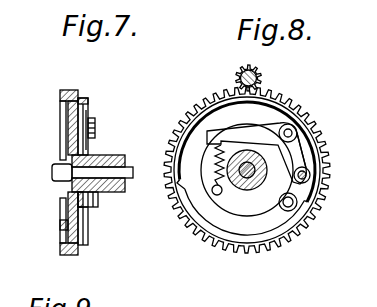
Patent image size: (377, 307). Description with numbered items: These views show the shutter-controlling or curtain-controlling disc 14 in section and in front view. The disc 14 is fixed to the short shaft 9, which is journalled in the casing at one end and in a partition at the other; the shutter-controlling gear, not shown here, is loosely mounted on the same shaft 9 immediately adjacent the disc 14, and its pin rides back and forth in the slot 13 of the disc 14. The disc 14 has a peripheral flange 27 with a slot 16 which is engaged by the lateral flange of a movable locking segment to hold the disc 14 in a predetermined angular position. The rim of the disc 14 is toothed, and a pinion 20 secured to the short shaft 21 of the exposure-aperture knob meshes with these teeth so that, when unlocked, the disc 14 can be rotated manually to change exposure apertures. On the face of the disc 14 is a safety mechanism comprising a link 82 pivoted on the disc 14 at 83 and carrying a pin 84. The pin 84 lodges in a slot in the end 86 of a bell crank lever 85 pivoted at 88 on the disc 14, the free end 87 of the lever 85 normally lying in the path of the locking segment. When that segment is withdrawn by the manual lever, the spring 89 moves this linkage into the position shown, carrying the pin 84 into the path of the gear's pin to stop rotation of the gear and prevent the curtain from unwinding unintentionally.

In FIG. 7, the short shaft 9 is at (125, 173).
In FIG. 8, the short shaft 9 is at (238, 190).
In FIG. 7, the slot 13 is at (63, 114).
In FIG. 7, the curtain-controlling disc 14 is at (79, 97).
In FIG. 8, the curtain-controlling disc 14 is at (282, 100).
In FIG. 8, the slot 16 is at (177, 192).
In FIG. 8, the pinion 20 is at (240, 70).
In FIG. 8, the short shaft 21 is at (261, 74).
In FIG. 8, the flange 27 is at (190, 118).
In FIG. 8, the link 82 is at (312, 190).
In FIG. 8, the pivot 83 is at (300, 210).
In FIG. 7, the pin 84 is at (100, 205).
In FIG. 8, the pin 84 is at (287, 206).
In FIG. 8, the bell crank lever 85 is at (292, 110).
In FIG. 7, the slotted end 86 is at (88, 144).
In FIG. 8, the slotted end 86 is at (313, 137).
In FIG. 8, the free end 87 is at (230, 132).
In FIG. 7, the pivot 88 is at (95, 124).
In FIG. 8, the pivot 88 is at (307, 118).
In FIG. 8, the spring 89 is at (212, 148).